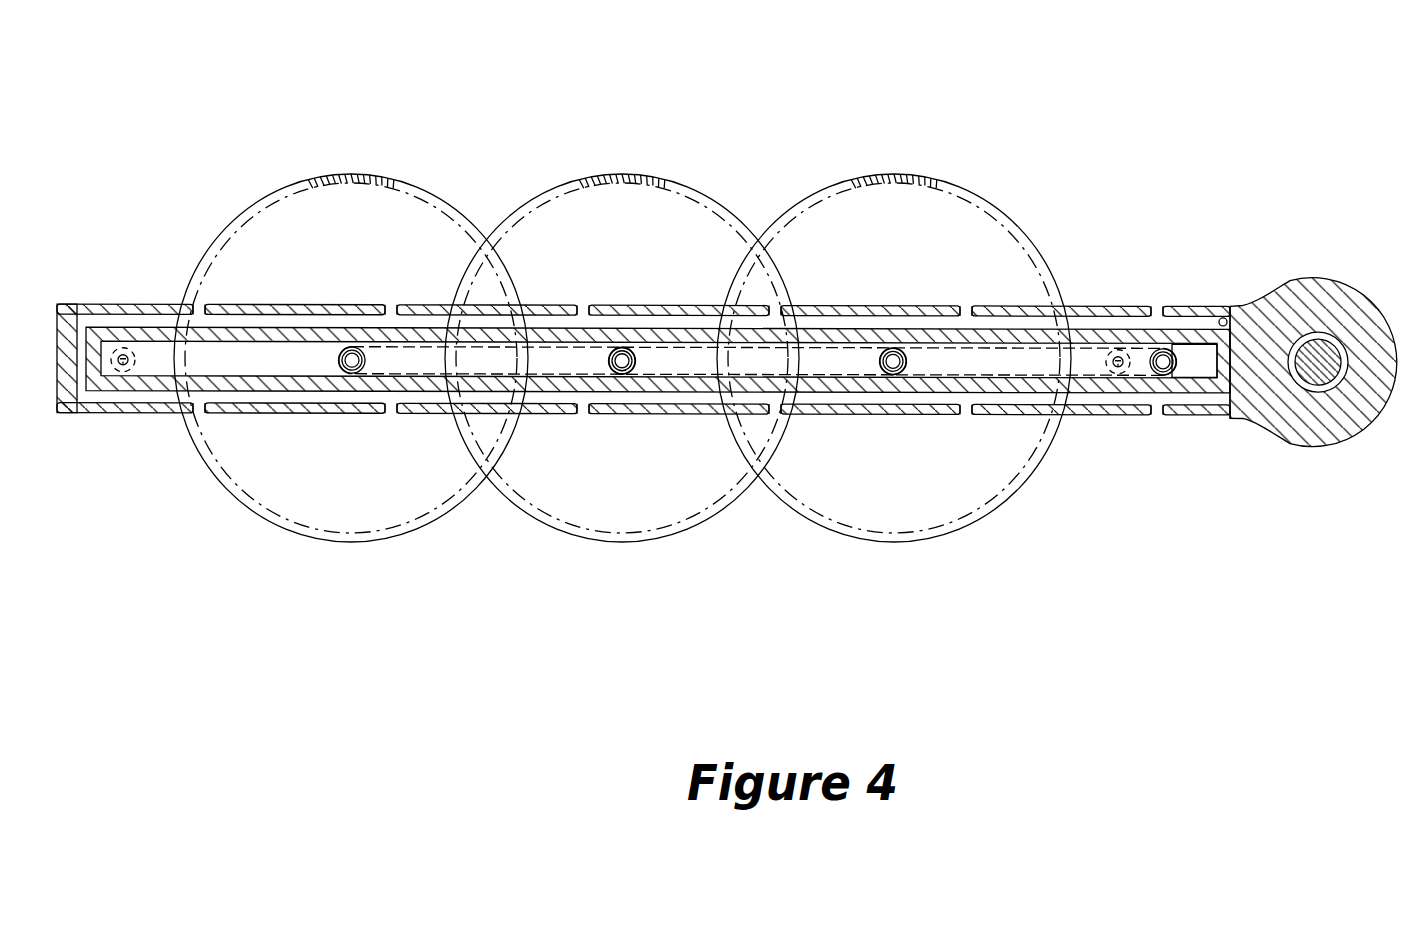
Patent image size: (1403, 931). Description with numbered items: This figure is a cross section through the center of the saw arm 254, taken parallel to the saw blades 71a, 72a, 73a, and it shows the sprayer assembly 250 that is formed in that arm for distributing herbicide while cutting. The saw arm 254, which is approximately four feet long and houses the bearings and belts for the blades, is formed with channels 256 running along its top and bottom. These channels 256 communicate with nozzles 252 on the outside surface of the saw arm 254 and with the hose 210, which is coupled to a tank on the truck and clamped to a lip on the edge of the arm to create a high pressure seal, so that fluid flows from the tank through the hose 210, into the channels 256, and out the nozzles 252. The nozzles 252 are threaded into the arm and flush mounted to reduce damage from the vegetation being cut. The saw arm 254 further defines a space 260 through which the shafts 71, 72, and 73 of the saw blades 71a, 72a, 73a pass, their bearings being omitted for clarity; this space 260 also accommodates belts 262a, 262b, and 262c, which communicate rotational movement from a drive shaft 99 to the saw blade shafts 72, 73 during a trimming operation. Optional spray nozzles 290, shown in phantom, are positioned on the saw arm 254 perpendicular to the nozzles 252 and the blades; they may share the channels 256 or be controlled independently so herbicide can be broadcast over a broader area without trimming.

The sprayer assembly 250 is at (1073, 141).
The saw arm 254 is at (80, 414).
The channels 256 is at (1114, 305).
The nozzles 252 is at (579, 303).
The spray nozzles 290 is at (125, 366).
The belt 262a is at (948, 378).
The belt 262b is at (870, 380).
The belt 262c is at (598, 378).
The space 260 is at (1197, 352).
The shaft 71 is at (353, 357).
The shaft 72 is at (623, 358).
The shaft 73 is at (893, 357).
The drive shaft 99 is at (1164, 352).
The hose 210 is at (1245, 302).
The saw blade 71a is at (352, 544).
The saw blade 72a is at (622, 544).
The saw blade 73a is at (894, 544).